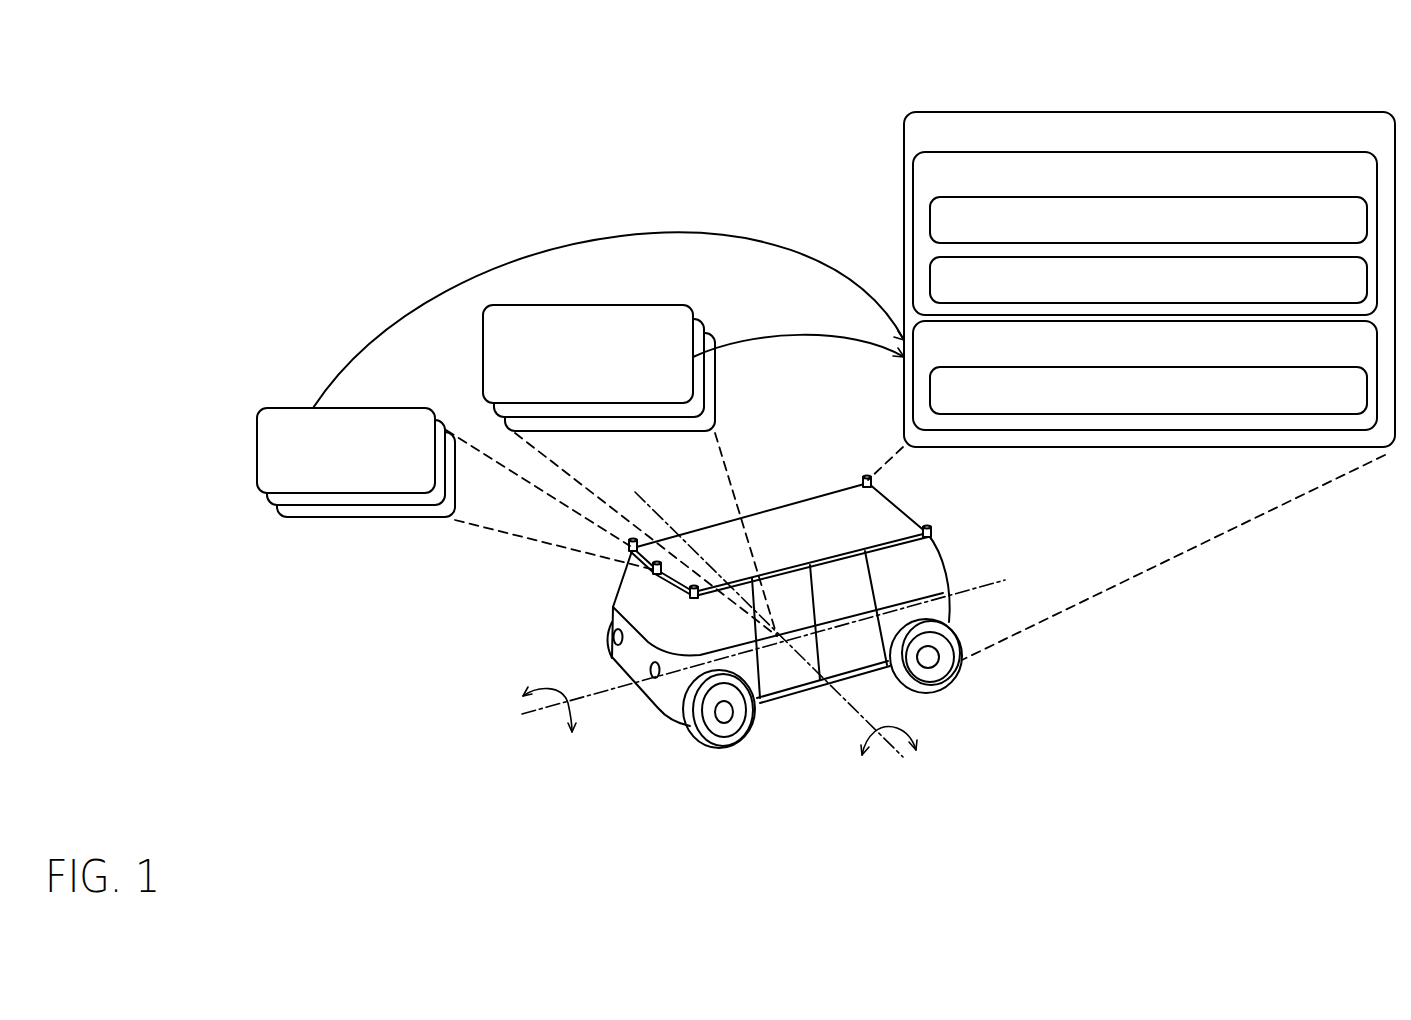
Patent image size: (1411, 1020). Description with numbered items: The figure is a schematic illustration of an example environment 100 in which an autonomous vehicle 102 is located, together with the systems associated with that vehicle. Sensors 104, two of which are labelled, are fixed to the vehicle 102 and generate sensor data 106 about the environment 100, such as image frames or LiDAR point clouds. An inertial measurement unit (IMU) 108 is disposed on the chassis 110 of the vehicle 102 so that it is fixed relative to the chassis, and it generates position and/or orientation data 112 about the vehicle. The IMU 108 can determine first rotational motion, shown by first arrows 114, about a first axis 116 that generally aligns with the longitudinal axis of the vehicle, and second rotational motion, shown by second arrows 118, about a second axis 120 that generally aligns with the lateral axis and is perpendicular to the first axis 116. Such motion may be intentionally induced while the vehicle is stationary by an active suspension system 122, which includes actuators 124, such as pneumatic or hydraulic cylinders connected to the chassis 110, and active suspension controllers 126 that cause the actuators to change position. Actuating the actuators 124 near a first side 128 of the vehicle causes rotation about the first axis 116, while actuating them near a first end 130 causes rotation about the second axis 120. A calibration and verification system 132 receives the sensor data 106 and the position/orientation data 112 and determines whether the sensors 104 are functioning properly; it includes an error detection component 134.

The environment 100 is at (355, 83).
The vehicle 102 is at (1203, 146).
The sensors 104 is at (630, 553).
The sensor data 106 is at (365, 474).
The inertial measurement unit (IMU) 108 is at (777, 640).
The chassis 110 is at (877, 668).
The position and/or orientation data 112 is at (607, 402).
The first arrows 114 is at (572, 703).
The first axis 116 is at (535, 712).
The second arrows 118 is at (872, 735).
The second axis 120 is at (848, 698).
The active suspension system 122 is at (1290, 189).
The actuators 124 is at (1218, 232).
The active suspension controllers 126 is at (1327, 292).
The first side 128 is at (863, 643).
The first end 130 is at (612, 655).
The calibration and verification system 132 is at (1340, 357).
The error detection component 134 is at (1245, 402).